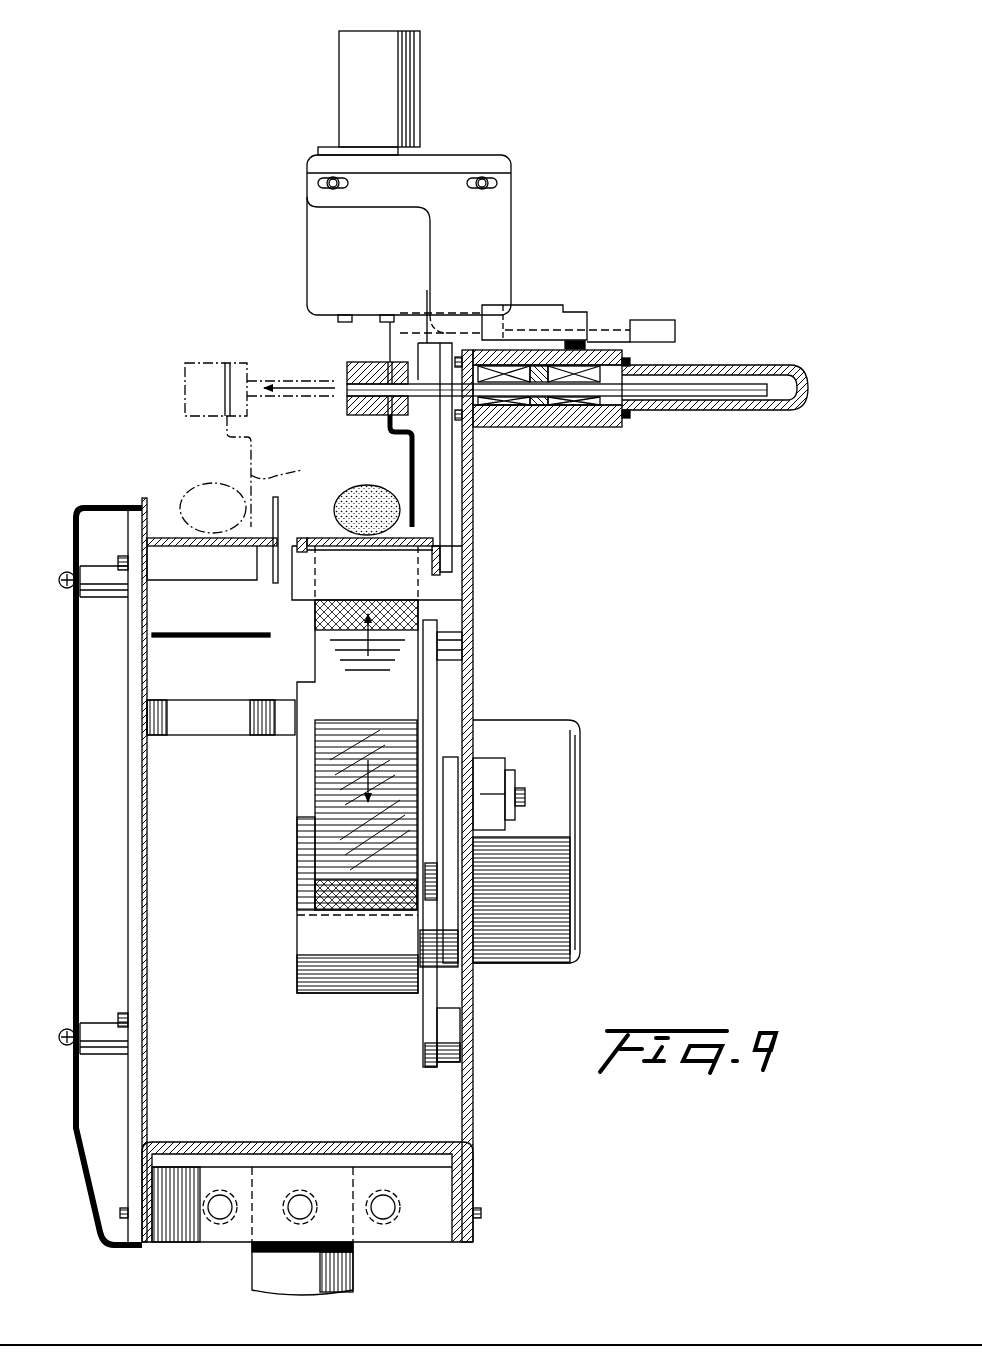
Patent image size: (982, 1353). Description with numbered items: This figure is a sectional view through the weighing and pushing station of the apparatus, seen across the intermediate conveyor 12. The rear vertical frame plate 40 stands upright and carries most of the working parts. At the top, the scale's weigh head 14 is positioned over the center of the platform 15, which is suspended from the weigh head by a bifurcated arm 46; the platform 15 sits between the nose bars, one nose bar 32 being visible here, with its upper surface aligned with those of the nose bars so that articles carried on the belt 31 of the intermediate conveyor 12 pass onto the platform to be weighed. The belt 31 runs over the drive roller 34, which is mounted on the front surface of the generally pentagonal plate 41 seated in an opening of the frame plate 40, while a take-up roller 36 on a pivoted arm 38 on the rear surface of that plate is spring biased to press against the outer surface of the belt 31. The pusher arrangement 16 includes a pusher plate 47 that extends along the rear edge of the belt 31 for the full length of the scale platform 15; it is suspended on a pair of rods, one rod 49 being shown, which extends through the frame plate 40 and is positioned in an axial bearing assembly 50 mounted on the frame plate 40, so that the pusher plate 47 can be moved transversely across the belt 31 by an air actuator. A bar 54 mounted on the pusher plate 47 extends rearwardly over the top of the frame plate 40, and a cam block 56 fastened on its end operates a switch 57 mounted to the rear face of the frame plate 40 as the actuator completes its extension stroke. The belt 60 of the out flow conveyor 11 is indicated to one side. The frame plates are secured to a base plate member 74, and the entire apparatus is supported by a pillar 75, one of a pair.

The out flow conveyor 11 is at (177, 633).
The intermediate conveyor 12 is at (322, 538).
The weigh head 14 is at (449, 94).
The platform 15 is at (398, 556).
The pusher arrangement 16 is at (350, 365).
The belt 31 is at (410, 537).
The nose bar 32 is at (298, 586).
The drive roller 34 is at (300, 875).
The take-up roller 36 is at (298, 976).
The pivoted arm 38 is at (445, 907).
The vertical frame plate 40 is at (470, 525).
The pentagonal plate 41 is at (432, 688).
The bifurcated arm 46 is at (445, 445).
The pusher plate 47 is at (407, 488).
The rod 49 is at (592, 428).
The axial bearing assembly 50 is at (558, 428).
The bar 54 is at (607, 330).
The cam block 56 is at (666, 322).
The switch 57 is at (544, 308).
The belt 60 is at (162, 525).
The base plate member 74 is at (280, 1141).
The pillar 75 is at (352, 1272).